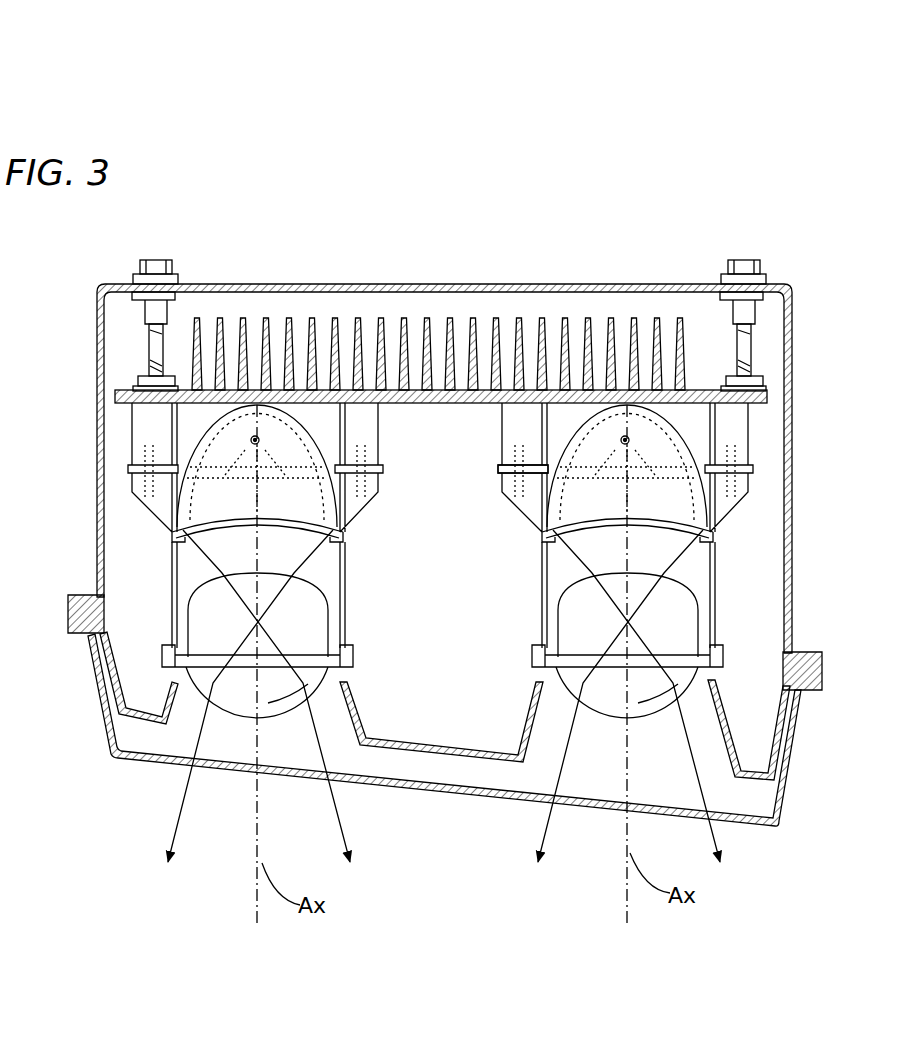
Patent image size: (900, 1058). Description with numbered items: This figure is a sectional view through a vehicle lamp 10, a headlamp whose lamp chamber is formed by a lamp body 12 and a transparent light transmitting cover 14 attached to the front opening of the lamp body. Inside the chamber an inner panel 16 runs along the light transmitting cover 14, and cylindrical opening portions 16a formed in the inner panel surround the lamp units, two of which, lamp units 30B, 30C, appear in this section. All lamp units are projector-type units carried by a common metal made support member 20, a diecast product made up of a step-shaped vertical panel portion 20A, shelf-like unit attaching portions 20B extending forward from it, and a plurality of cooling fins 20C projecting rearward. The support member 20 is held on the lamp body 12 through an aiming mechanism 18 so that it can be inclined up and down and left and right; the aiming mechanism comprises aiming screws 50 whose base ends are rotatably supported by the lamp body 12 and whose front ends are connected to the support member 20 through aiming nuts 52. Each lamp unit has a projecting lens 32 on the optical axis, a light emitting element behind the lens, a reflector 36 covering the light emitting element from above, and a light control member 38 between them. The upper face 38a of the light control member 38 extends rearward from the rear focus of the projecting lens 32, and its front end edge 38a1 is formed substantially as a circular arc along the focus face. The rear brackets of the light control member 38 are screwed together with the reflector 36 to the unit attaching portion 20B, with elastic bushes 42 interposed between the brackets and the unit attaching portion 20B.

The vehicle lamp 10 is at (783, 265).
The lamp body 12 is at (799, 510).
The light transmitting cover 14 is at (133, 768).
The inner panel 16 is at (453, 764).
The cylindrical opening portion 16a is at (716, 744).
The aiming mechanism 18 is at (109, 325).
The metal made support member 20 is at (449, 375).
The vertical panel portion 20A is at (430, 404).
The unit attaching portion 20B is at (140, 433).
The cooling fins 20C is at (498, 318).
The lamp unit 30B is at (288, 665).
The lamp unit 30C is at (643, 661).
The projecting lens 32 is at (627, 675).
The reflector 36 is at (583, 466).
The light control member 38 is at (645, 599).
The upper face 38a is at (584, 595).
The front end edge 38a1 is at (596, 628).
The elastic bush 42 is at (499, 490).
The aiming screw 50 is at (152, 312).
The aiming nut 52 is at (140, 378).